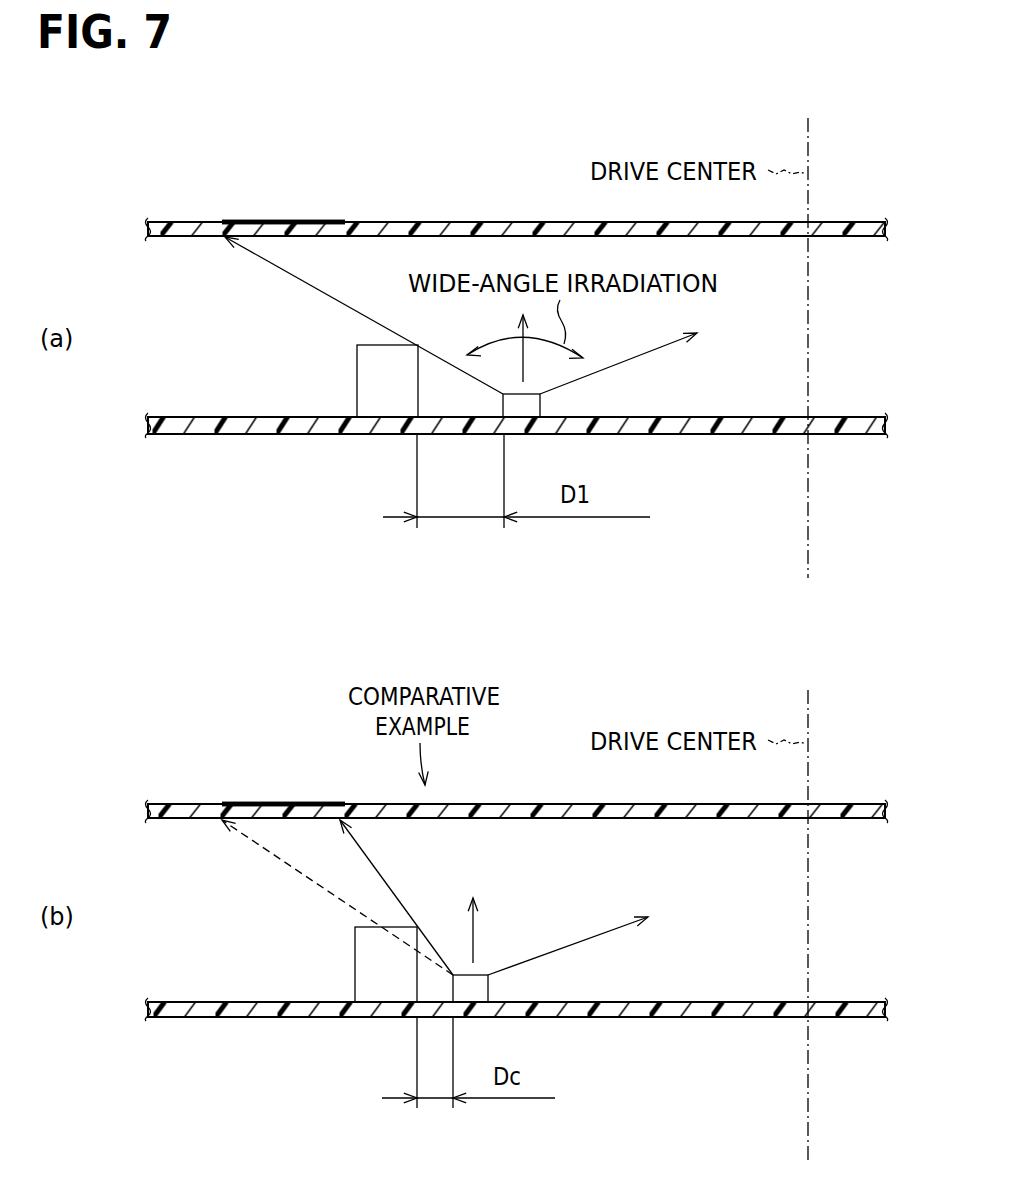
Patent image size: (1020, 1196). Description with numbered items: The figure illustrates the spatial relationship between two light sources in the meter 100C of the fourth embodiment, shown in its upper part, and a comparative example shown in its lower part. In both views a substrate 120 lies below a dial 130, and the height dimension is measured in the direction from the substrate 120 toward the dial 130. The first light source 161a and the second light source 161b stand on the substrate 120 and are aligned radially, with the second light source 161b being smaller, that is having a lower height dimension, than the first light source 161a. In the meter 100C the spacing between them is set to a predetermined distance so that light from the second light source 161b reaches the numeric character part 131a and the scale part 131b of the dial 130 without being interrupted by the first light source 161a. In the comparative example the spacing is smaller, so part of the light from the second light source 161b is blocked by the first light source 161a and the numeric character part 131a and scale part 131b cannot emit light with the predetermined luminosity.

The dial 130 is at (184, 222).
The numeric character part 131a is at (273, 222).
The scale part 131b is at (283, 513).
The substrate 120 is at (183, 436).
The meter 100C is at (415, 205).
The first light source 161a is at (357, 364).
The second light source 161b is at (540, 405).